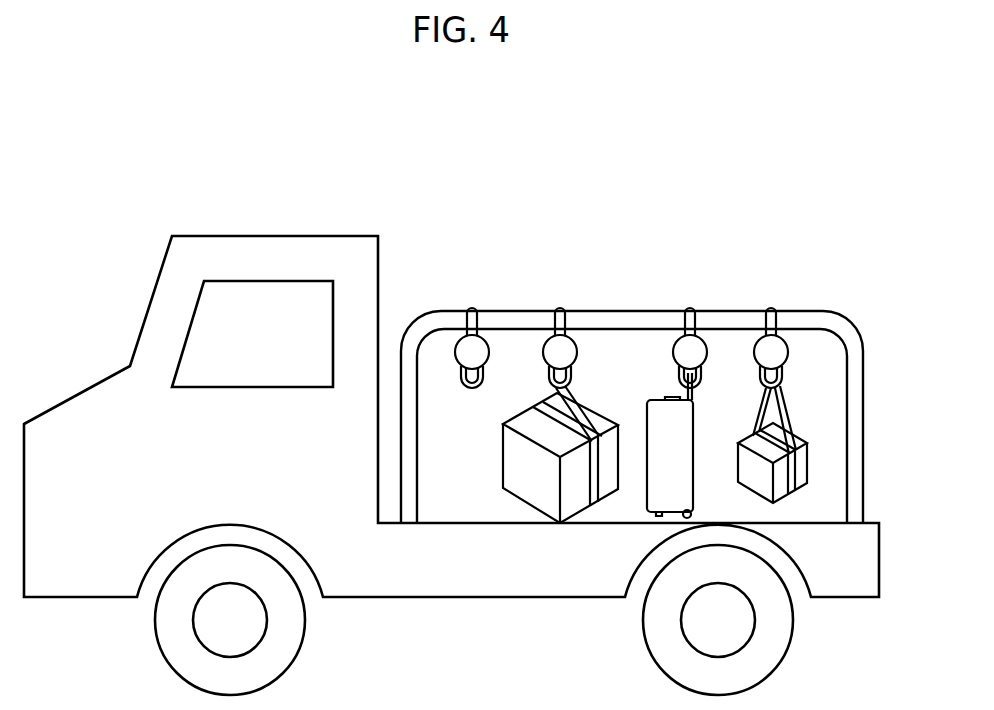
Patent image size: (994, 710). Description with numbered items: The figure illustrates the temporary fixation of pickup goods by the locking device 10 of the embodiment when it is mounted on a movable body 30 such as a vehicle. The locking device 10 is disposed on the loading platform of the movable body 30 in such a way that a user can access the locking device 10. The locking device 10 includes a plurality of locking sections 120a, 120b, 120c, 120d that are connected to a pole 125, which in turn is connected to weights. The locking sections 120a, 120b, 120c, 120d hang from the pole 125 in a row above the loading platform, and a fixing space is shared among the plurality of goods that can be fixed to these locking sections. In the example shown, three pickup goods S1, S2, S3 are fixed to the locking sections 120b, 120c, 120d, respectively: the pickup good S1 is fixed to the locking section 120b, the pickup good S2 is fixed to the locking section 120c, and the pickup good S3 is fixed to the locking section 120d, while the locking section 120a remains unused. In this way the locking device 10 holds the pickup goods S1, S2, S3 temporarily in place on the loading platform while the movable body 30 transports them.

The movable body 30 is at (134, 265).
The locking device 10 is at (663, 356).
The pole 125 is at (862, 337).
The locking section 120a is at (474, 308).
The locking section 120b is at (561, 308).
The locking section 120c is at (692, 308).
The locking section 120d is at (773, 308).
The pickup goods S1 is at (493, 445).
The pickup goods S2 is at (639, 405).
The pickup goods S3 is at (794, 424).